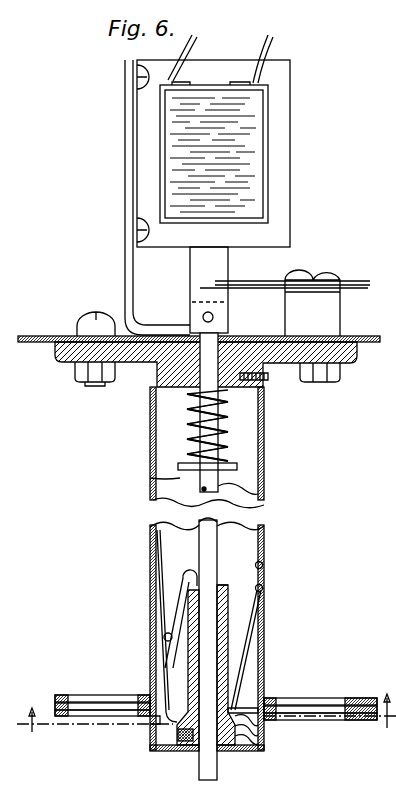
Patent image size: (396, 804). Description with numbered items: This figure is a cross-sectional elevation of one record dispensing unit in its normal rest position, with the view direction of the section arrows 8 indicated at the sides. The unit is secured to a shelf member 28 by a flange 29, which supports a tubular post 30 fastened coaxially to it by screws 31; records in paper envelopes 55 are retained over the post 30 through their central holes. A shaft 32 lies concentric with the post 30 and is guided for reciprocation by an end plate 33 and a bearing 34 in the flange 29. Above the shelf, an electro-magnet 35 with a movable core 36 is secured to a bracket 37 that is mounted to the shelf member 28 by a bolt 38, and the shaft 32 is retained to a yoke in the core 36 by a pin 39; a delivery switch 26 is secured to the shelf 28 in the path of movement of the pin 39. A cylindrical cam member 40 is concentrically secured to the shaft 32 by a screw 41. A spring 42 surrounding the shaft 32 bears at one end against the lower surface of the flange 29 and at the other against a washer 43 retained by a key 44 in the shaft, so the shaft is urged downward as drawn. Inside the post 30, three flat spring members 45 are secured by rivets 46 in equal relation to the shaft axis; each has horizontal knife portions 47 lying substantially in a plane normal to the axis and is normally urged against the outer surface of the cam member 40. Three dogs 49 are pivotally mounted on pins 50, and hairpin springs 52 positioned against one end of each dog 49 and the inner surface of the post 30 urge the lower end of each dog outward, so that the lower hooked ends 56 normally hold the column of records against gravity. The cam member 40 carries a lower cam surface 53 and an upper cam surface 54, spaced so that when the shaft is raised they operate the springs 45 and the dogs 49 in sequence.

The section line 8- 8 is at (206, 729).
The delivery switch 26 is at (314, 281).
The shelf member 28 is at (22, 336).
The flange 29 is at (340, 364).
The tubular post 30 is at (265, 470).
The screws 31 is at (266, 378).
The shaft 32 is at (200, 487).
The end plate 33 is at (195, 751).
The bearing 34 is at (196, 360).
The electro-magnet 35 is at (290, 146).
The movable core 36 is at (230, 276).
The bracket 37 is at (125, 168).
The bolt 38 is at (77, 372).
The pin 39 is at (203, 317).
The cylindrical cam member 40 is at (228, 623).
The screw 41 is at (180, 734).
The spring 42 is at (222, 406).
The washer 43 is at (237, 466).
The key 44 is at (262, 493).
The flat spring members 45 is at (248, 654).
The rivets 46 is at (263, 588).
The horizontal knife portions 47 is at (265, 727).
The dogs 49 is at (172, 610).
The pins 50 is at (164, 636).
The hairpin springs 52 is at (167, 662).
The lower cam surface 53 is at (262, 742).
The upper cam surface 54 is at (223, 583).
The records in paper envelopes 55 is at (80, 695).
The lower hooked ends 56 is at (150, 720).